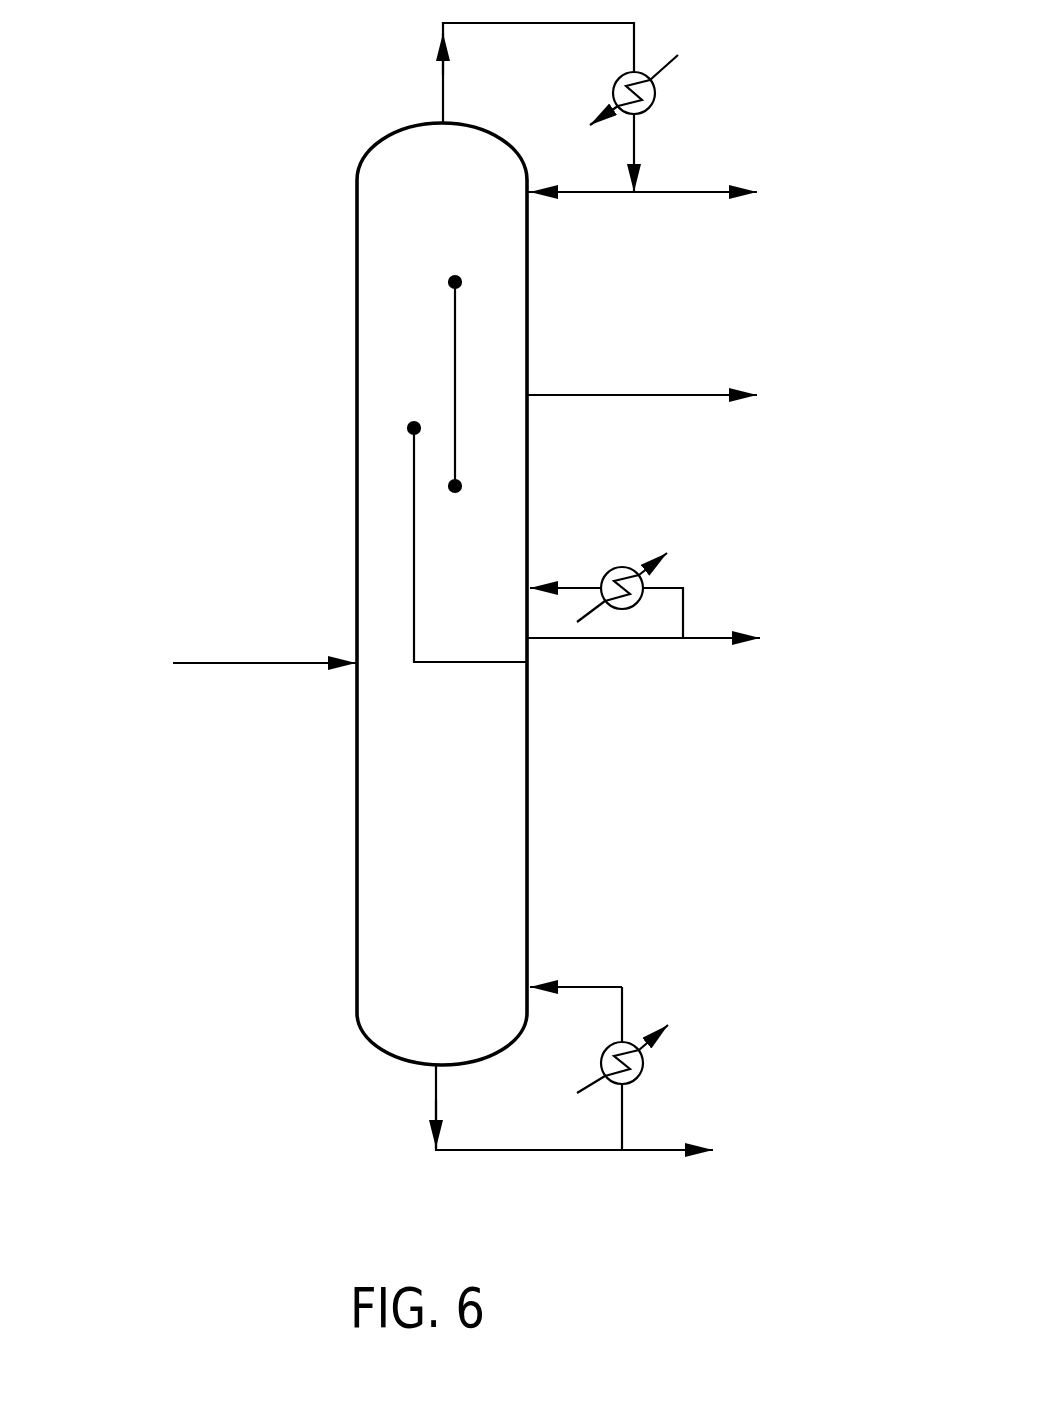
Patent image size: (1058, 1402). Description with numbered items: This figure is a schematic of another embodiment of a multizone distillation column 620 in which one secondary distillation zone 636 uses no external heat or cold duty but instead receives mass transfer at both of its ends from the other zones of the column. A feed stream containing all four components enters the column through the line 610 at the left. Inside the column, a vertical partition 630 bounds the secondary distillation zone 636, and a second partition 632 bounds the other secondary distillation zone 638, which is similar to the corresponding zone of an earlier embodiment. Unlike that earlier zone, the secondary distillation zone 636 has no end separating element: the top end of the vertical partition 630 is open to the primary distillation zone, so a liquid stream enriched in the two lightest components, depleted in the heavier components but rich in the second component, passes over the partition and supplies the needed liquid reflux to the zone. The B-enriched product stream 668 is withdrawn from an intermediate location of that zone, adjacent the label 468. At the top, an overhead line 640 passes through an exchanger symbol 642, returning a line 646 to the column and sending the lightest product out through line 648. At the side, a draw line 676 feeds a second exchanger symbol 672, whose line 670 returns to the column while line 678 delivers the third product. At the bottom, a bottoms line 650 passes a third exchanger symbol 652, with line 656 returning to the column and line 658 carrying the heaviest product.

The feed stream ABCD 610 is at (275, 665).
The multizone distillation column 620 is at (357, 334).
The vertical partition 630 is at (455, 352).
The second dividing wall 632 is at (414, 608).
The secondary distillation zone 636 is at (510, 397).
The secondary distillation zone 638 is at (490, 585).
The overhead vapor line 640 is at (443, 85).
The condenser 642 is at (641, 62).
The reflux line 646 is at (595, 194).
The product A outlet line 648 is at (672, 192).
The B-enriched product stream 668 is at (628, 395).
The column section 468 is at (739, 497).
The return line 670 is at (573, 588).
The side reboiler heat exchanger 672 is at (632, 568).
The side draw line 676 is at (578, 640).
The product C outlet line 678 is at (715, 640).
The reboiler return line 656 is at (588, 987).
The reboiler 652 is at (645, 1078).
The bottoms line 650 is at (436, 1097).
The product D outlet line 658 is at (648, 1152).